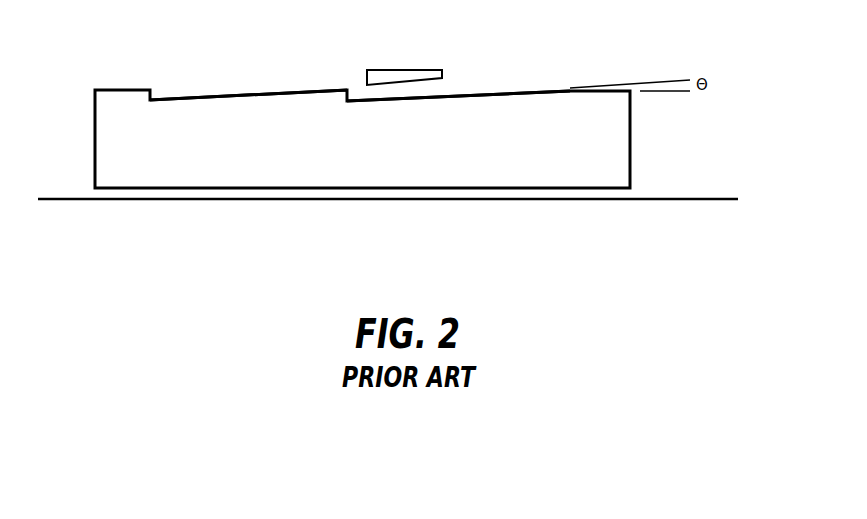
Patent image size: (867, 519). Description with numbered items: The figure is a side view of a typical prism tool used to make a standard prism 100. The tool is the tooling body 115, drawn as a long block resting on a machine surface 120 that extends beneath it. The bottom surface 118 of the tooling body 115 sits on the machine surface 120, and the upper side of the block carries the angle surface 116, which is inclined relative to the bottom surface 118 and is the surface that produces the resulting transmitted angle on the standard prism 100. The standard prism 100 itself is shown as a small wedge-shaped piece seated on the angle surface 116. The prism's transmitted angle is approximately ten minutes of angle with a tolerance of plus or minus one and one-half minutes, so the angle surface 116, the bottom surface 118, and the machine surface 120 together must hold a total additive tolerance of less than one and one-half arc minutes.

The standard prism 100 is at (382, 69).
The tooling body 115 is at (227, 110).
The angle surface 116 is at (444, 94).
The bottom surface 118 is at (529, 186).
The machine surface 120 is at (648, 201).